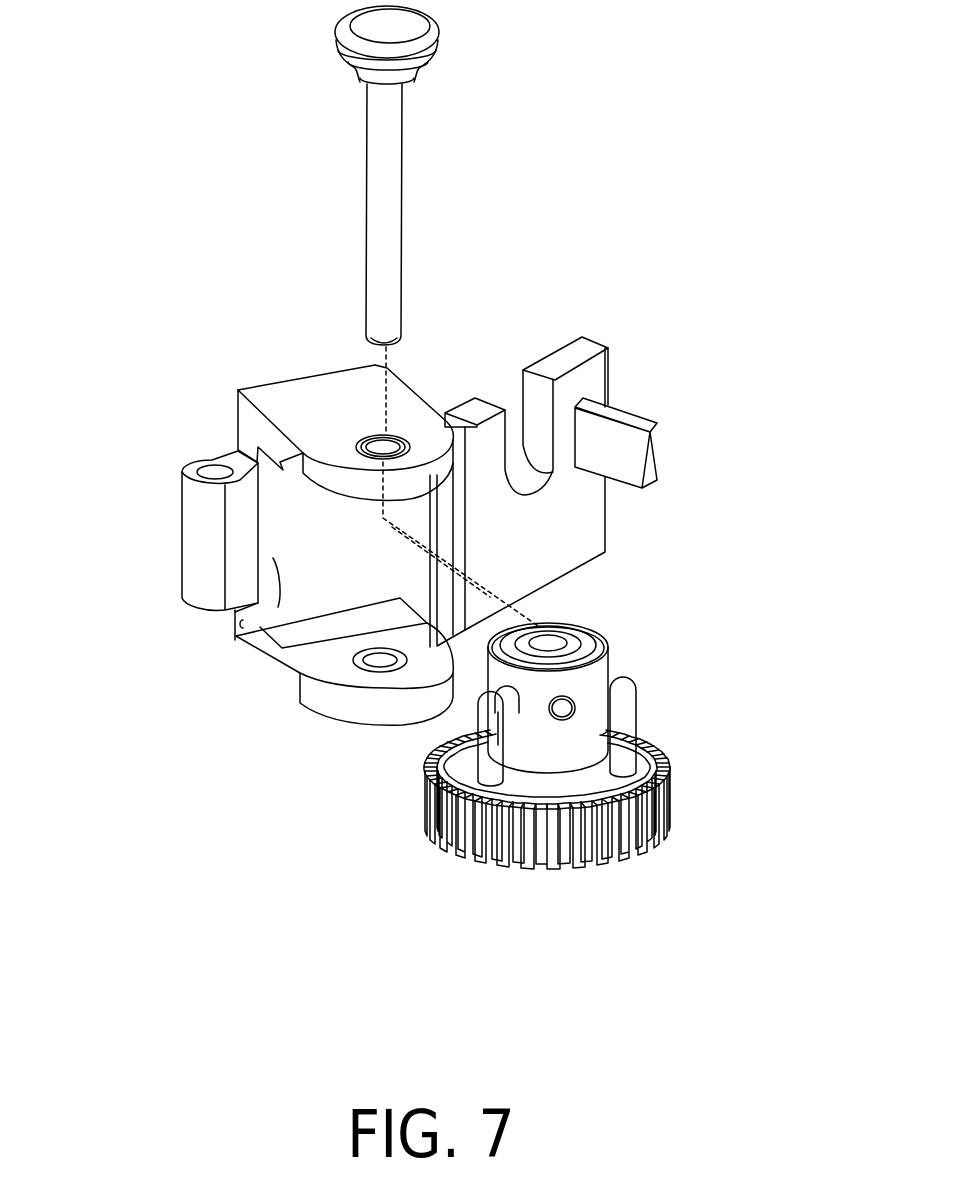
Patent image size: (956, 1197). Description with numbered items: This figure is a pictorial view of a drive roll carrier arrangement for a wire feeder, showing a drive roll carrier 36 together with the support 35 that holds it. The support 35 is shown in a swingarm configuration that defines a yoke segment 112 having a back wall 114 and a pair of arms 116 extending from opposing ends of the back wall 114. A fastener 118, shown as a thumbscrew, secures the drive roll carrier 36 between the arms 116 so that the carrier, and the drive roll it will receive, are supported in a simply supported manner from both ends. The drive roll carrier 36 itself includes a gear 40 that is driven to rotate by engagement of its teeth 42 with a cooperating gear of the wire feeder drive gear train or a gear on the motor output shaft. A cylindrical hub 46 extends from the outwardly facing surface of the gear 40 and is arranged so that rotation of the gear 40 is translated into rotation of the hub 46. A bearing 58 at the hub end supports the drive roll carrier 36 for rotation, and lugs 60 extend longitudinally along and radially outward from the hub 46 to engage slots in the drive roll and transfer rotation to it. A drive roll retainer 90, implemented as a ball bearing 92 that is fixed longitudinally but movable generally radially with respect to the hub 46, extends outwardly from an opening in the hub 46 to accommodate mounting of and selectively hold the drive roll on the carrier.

The fastener 118 is at (418, 172).
The support 35 is at (205, 315).
The arms 116 is at (318, 397).
The back wall 114 is at (237, 633).
The yoke segment 112 is at (208, 683).
The drive roll carrier 36 is at (775, 663).
The hub 46 is at (607, 720).
The bearing 58 is at (577, 623).
The drive roll retainer 90 is at (603, 683).
The ball bearing 92 is at (567, 717).
The lugs 60 is at (488, 762).
The gear 40 is at (559, 842).
The teeth 42 is at (635, 855).